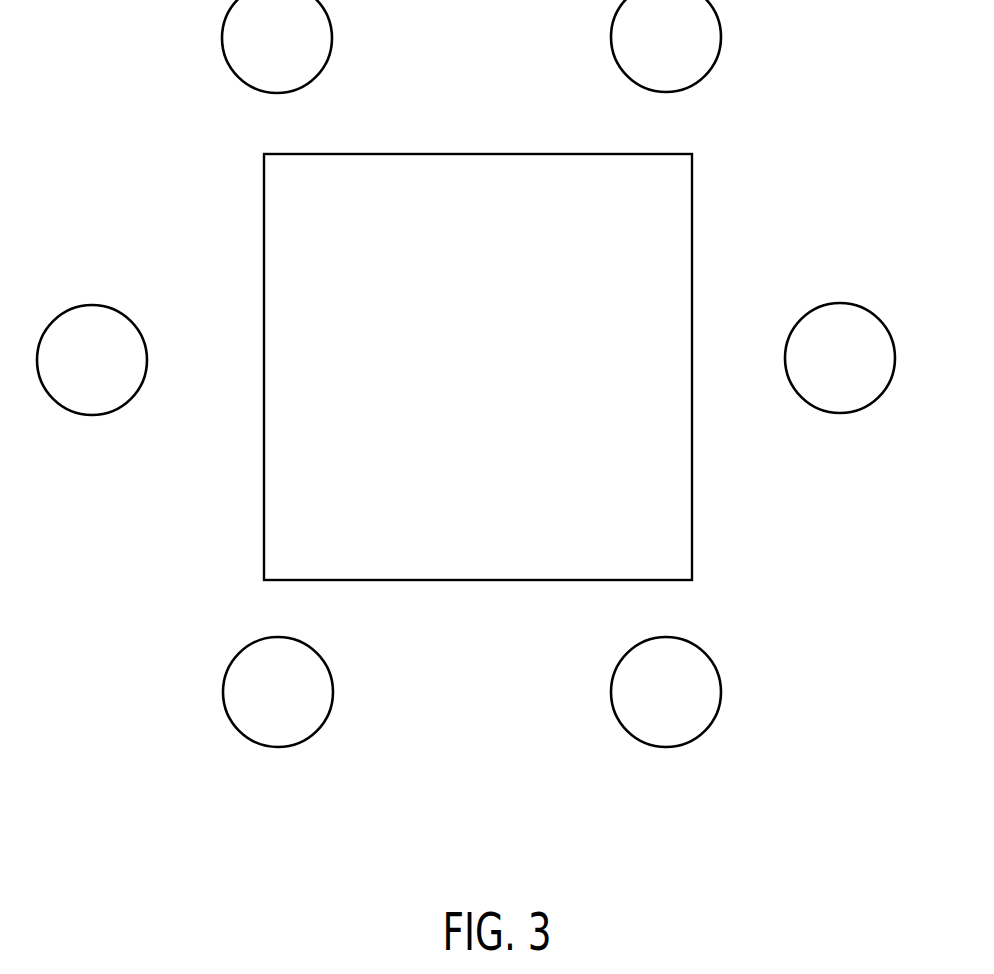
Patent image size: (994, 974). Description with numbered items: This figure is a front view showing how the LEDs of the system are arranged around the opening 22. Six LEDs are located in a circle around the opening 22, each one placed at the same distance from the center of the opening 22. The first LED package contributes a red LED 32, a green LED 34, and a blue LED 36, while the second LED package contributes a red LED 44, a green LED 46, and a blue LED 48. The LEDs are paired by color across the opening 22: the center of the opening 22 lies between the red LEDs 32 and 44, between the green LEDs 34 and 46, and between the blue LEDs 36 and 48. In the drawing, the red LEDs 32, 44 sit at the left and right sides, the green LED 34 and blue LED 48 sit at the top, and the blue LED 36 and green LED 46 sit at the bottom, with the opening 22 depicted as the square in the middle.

The opening 22 is at (264, 280).
The red LED 32 is at (127, 393).
The green LED 34 is at (317, 61).
The blue LED 36 is at (312, 723).
The red LED 44 is at (862, 398).
The green LED 46 is at (707, 718).
The blue LED 48 is at (697, 68).